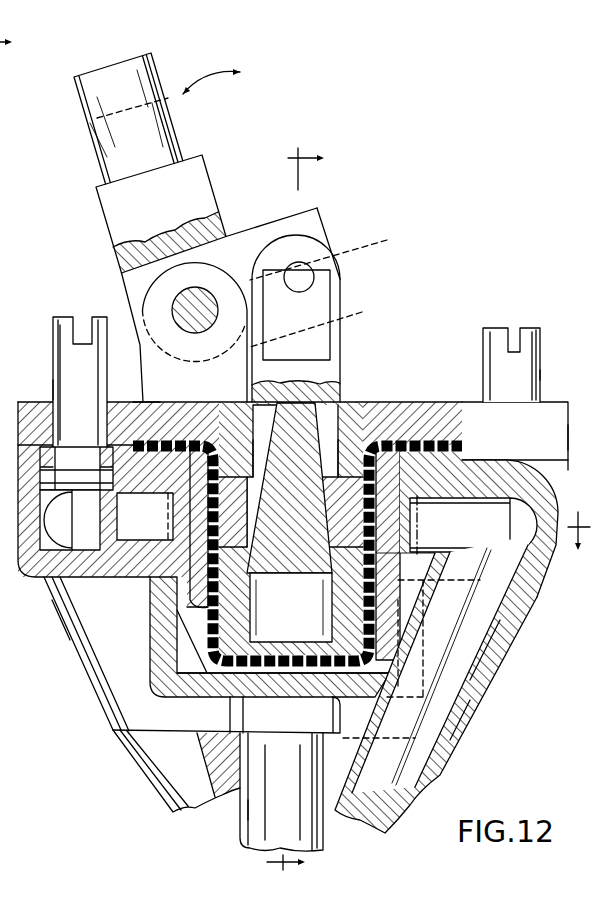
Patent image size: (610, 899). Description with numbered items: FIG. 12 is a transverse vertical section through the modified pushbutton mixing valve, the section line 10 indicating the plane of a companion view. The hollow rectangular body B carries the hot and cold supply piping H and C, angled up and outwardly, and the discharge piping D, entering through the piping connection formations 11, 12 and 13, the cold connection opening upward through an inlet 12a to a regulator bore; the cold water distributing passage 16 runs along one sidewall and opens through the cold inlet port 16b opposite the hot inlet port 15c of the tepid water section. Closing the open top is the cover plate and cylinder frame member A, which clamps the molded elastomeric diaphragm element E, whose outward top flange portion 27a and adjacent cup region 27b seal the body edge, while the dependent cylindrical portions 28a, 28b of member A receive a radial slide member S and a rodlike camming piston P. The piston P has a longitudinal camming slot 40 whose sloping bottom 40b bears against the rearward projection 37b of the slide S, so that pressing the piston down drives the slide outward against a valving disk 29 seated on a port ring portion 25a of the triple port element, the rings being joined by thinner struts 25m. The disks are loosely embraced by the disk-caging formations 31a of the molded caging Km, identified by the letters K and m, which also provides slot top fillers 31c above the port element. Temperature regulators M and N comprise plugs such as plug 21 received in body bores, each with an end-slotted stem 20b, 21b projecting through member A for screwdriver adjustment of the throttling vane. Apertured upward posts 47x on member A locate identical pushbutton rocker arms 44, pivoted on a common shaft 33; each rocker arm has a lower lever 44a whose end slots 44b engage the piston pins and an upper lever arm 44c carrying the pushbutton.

The section line 10- 10 is at (312, 513).
The piping connection formation 11 is at (77, 660).
The piping connection formation 12 is at (472, 716).
The inlet 12a is at (490, 652).
The discharge connection formation 13 is at (300, 730).
The hot water inlet port 15c is at (148, 518).
The cold water distributing passage 16 is at (531, 535).
The cold water inlet port 16b is at (423, 525).
The end-slotted stem 20b is at (528, 337).
The plug 21 is at (63, 633).
The end-slotted stem 21b is at (67, 314).
The port ring portion 25a is at (150, 598).
The struts 25m is at (116, 580).
The outward top flange portion 27a is at (187, 430).
The inner wall strip 27b is at (402, 672).
The bottom plate 28a is at (176, 680).
The cup-shaped seal 28b is at (293, 628).
The valving disk 29 is at (153, 638).
The disk-caging formation 31a is at (392, 562).
The slot top filler 31c is at (462, 458).
The common shaft 33 is at (183, 300).
The rearward projection 37b is at (263, 573).
The camming slot 40 is at (348, 352).
The sloping groove bottom 40b is at (338, 402).
The pushbutton rocker arm 44 is at (106, 226).
The lever arm 44a is at (250, 228).
The end slots 44b is at (285, 293).
The lever arm 44c is at (192, 170).
The upward post 47x is at (143, 401).
The cover plate and cylinder frame member A is at (573, 437).
The body B is at (568, 483).
The cold water supply piping C is at (423, 783).
The discharge piping D is at (262, 815).
The diaphragm element E is at (430, 467).
The hot water supply piping H is at (168, 772).
The caged valving disk subassembly K is at (395, 467).
The caging Km m is at (424, 385).
The temperature regulator M is at (52, 385).
The temperature regulator N is at (541, 374).
The camming piston P is at (352, 333).
The slide member S is at (235, 467).